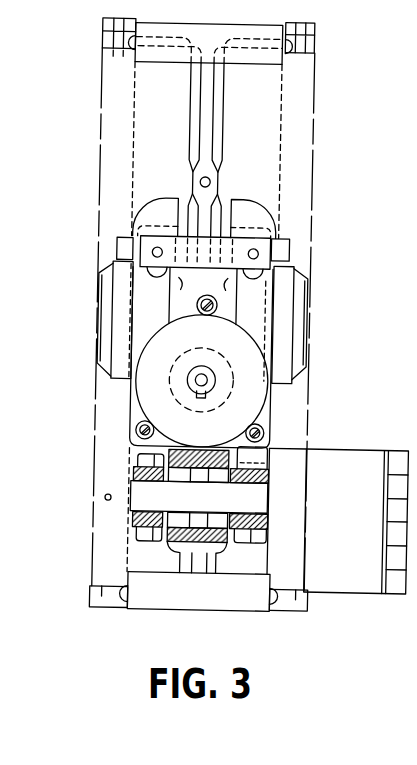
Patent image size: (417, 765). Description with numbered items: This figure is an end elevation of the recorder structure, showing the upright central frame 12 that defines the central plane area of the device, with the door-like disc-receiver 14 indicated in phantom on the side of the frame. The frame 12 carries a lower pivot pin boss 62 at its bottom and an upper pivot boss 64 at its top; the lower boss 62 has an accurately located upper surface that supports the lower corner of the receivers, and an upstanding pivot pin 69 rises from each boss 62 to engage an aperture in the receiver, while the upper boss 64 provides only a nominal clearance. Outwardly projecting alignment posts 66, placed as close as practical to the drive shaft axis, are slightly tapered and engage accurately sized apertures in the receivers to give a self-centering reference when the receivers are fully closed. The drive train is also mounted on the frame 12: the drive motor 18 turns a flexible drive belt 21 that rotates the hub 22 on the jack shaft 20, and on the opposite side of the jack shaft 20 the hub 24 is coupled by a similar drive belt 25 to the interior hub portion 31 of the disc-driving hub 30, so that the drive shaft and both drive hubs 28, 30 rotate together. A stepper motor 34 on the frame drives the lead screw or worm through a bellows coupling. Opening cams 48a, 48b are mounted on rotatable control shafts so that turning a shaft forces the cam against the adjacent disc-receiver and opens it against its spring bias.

The central frame 12 is at (184, 128).
The disc-receiver 14 is at (303, 115).
The drive motor 18 is at (361, 534).
The jack shaft 20 is at (221, 507).
The drive belt 21 is at (156, 543).
The hub 22 is at (131, 460).
The hub 24 is at (270, 467).
The drive belt 25 is at (258, 454).
The drive hub 28 is at (102, 300).
The drive hub 30 is at (302, 301).
The interior hub portion 31 is at (204, 364).
The stepper motor 34 is at (164, 350).
The opening cam 48a is at (156, 213).
The opening cam 48b is at (251, 211).
The lower pivot pin boss 62 is at (100, 602).
The upper pivot boss 64 is at (97, 34).
The alignment post 66 is at (119, 252).
The pivot pin 69 is at (112, 589).